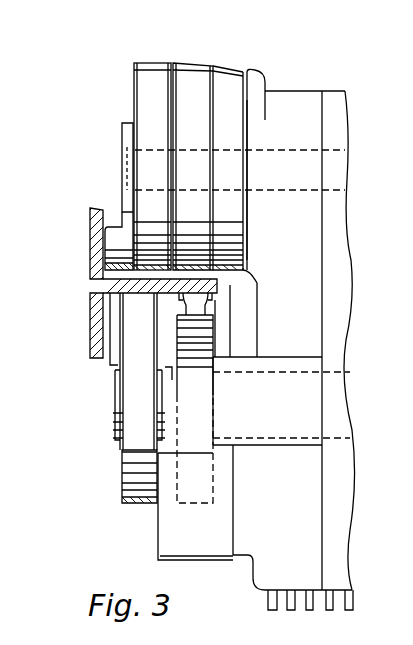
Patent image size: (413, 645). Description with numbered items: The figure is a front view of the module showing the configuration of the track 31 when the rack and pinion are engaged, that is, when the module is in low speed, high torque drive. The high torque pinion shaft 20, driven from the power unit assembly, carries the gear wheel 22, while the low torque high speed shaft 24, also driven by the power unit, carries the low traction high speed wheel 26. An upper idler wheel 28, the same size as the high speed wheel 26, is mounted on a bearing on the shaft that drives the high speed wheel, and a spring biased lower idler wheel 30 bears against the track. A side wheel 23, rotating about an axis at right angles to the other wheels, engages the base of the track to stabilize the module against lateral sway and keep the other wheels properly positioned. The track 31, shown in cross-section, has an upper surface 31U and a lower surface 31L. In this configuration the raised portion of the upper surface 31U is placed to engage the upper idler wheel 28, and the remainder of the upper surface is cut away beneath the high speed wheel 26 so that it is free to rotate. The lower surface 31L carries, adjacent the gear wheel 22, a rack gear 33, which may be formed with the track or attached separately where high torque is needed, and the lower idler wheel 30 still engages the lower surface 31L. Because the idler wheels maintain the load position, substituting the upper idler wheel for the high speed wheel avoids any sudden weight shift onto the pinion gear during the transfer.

The high torque pinion shaft 20 is at (350, 372).
The gear wheel 22 is at (213, 343).
The side wheel 23 is at (112, 225).
The low torque high speed shaft 24 is at (272, 148).
The low traction high speed wheel 26 is at (187, 63).
The upper idler wheel 28 is at (162, 63).
The lower idler wheel 30 is at (120, 477).
The track 31 is at (132, 285).
The upper surface 31U is at (96, 268).
The lower surface 31L is at (120, 297).
The rack gear 33 is at (200, 308).